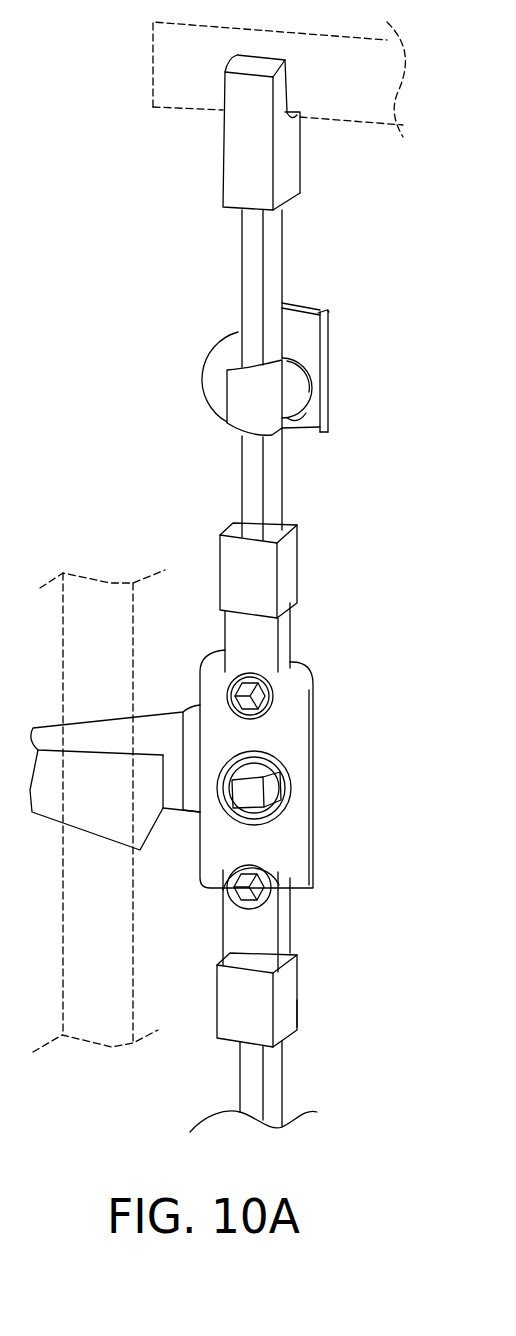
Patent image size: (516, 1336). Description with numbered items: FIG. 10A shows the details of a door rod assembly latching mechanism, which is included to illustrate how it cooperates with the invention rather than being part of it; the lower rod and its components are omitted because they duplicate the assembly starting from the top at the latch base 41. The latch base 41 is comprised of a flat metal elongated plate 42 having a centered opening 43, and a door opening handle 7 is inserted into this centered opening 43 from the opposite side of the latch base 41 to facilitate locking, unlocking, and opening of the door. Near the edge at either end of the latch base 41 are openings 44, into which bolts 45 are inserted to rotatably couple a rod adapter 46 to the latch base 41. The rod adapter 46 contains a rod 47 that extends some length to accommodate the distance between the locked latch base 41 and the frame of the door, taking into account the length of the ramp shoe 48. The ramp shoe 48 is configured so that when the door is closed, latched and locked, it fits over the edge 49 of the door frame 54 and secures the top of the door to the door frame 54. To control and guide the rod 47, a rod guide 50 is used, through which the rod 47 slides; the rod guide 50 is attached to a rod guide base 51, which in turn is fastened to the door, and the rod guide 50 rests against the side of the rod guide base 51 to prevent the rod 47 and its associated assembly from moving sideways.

The door opening handle 7 is at (273, 888).
The latch base 41 is at (397, 793).
The flat metal elongated plate 42 is at (302, 747).
The centered opening 43 is at (253, 803).
The openings 44 is at (268, 690).
The bolts 45 is at (255, 707).
The rod adapter 46 is at (283, 625).
The rod 47 is at (273, 275).
The ramp shoe 48 is at (280, 158).
The edge 49 is at (370, 118).
The rod guide 50 is at (278, 413).
The rod guide base 51 is at (325, 310).
The door frame 54 is at (357, 78).